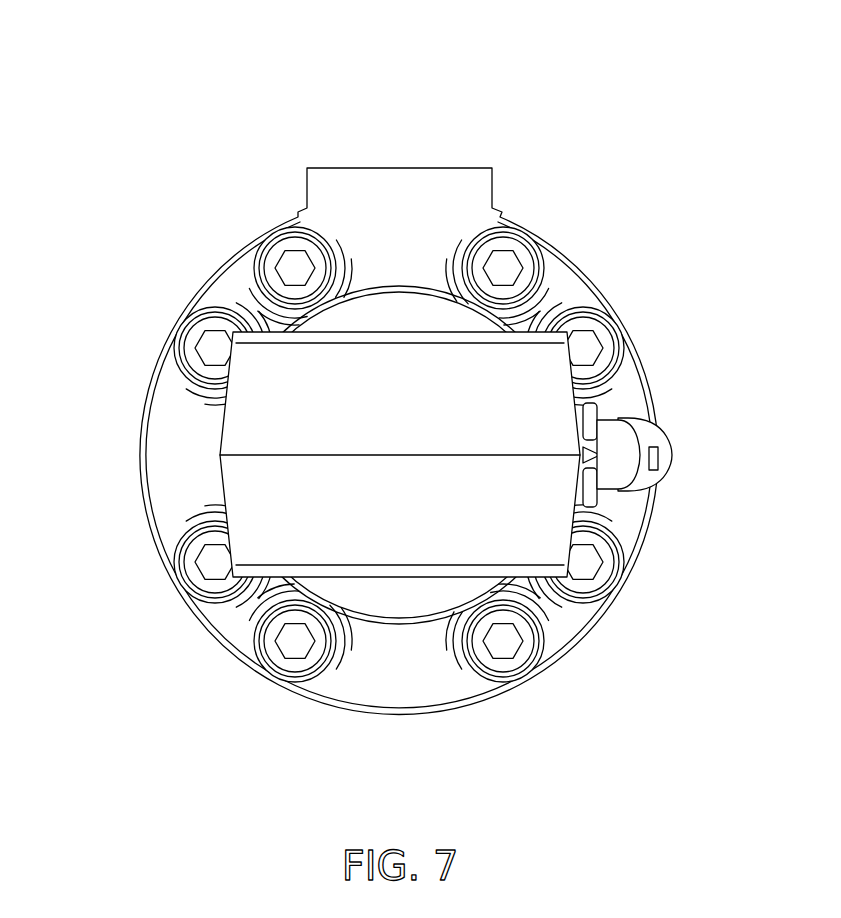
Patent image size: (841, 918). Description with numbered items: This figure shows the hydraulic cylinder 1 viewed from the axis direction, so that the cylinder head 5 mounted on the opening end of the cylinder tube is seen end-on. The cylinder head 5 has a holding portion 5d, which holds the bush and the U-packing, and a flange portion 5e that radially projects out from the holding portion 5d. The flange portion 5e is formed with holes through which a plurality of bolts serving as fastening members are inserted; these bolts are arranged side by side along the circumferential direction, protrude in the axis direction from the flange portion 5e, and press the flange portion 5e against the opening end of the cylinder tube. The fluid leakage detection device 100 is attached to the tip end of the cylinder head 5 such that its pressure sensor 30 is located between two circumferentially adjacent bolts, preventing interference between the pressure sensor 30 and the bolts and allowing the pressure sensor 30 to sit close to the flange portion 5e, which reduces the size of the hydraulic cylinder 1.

The hydraulic cylinder 1 is at (222, 182).
The cylinder head 5 is at (360, 722).
The holding portion 5d is at (432, 646).
The flange portion 5e is at (553, 650).
The pressure sensor 30 is at (659, 438).
The fluid leakage detection device 100 is at (682, 455).